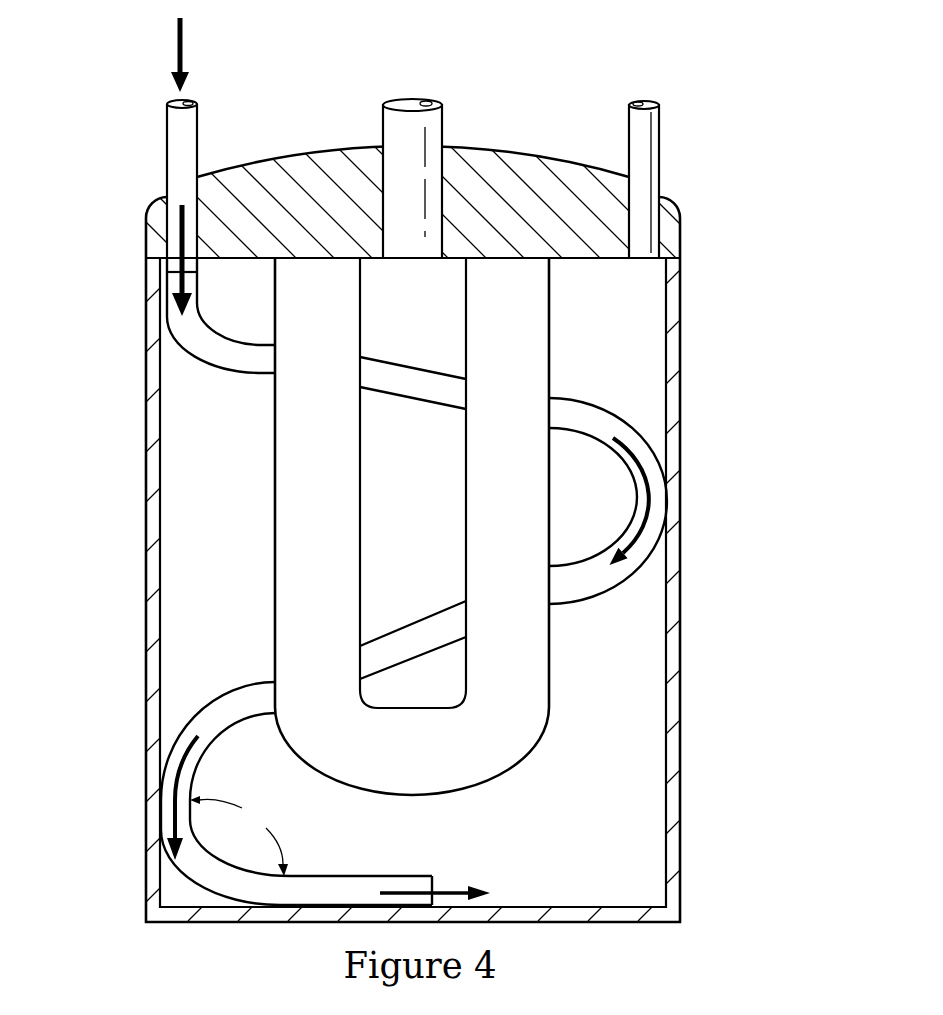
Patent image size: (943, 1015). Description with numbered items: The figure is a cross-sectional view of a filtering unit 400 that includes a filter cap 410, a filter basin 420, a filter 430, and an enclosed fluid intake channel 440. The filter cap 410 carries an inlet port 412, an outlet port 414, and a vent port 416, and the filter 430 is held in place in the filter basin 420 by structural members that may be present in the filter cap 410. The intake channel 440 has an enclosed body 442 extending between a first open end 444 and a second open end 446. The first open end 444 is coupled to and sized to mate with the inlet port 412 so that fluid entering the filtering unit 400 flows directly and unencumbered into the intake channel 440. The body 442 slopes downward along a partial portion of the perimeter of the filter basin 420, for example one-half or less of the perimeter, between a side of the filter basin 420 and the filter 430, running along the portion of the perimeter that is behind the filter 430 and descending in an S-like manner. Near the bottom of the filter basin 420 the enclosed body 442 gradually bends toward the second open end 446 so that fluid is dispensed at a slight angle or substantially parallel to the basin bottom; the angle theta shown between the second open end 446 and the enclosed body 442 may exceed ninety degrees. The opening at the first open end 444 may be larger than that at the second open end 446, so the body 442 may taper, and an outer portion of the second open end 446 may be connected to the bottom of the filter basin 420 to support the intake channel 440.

The filtering unit 400 is at (380, 463).
The filter cap 410 is at (512, 150).
The inlet port 412 is at (165, 152).
The outlet port 414 is at (382, 123).
The vent port 416 is at (660, 156).
The filter basin 420 is at (702, 258).
The filter 430 is at (548, 368).
The intake channel 440 is at (250, 330).
The enclosed body 442 is at (404, 370).
The first open end 444 is at (167, 280).
The second open end 446 is at (432, 876).